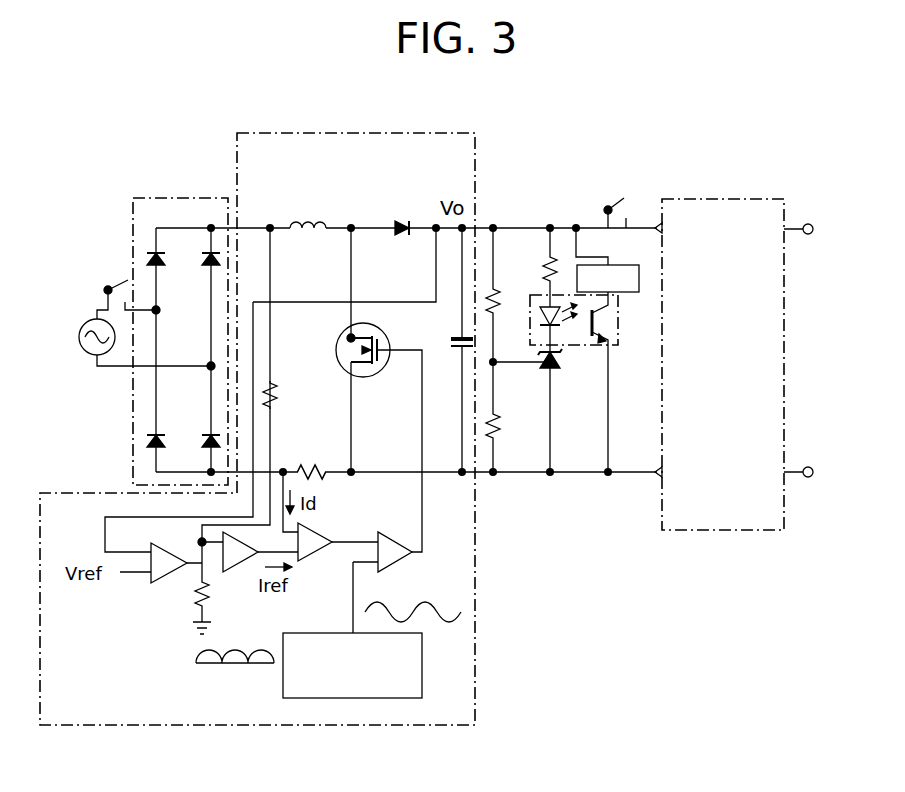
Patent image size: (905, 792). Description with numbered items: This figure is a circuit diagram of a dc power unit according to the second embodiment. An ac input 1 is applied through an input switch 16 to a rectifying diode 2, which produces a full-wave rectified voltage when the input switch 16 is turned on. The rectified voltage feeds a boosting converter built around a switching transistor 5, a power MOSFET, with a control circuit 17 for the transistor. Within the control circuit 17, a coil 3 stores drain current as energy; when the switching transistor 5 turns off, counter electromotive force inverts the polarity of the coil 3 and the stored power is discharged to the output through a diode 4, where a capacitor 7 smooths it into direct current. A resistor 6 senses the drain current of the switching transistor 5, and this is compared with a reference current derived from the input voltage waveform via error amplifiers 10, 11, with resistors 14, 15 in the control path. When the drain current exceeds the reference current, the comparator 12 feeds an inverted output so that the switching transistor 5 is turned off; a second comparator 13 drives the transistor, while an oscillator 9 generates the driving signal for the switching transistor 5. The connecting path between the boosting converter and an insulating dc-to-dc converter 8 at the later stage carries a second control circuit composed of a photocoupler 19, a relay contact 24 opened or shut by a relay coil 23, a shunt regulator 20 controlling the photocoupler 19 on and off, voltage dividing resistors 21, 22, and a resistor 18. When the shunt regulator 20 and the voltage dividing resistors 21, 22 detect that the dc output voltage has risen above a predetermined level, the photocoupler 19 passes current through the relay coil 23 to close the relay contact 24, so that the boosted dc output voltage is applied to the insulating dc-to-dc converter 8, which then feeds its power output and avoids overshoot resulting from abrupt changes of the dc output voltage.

The ac input 1 is at (97, 356).
The rectifying diode 2 is at (192, 198).
The coil 3 is at (306, 226).
The diode 4 is at (402, 221).
The switching transistor 5 is at (345, 338).
The resistor 6 is at (302, 466).
The capacitor 7 is at (456, 350).
The insulating dc-to-dc converter 8 is at (732, 198).
The oscillator 9 is at (283, 683).
The error amplifier 10 is at (152, 576).
The error amplifier 11 is at (241, 568).
The comparator 12 is at (320, 562).
The comparator 13 is at (393, 538).
The resistor 14 is at (278, 392).
The resistor 15 is at (196, 604).
The input switch 16 is at (130, 285).
The control circuit 17 is at (478, 573).
The resistor 18 is at (550, 262).
The photocoupler 19 is at (611, 348).
The shunt regulator 20 is at (556, 373).
The voltage dividing resistor 21 is at (497, 292).
The voltage dividing resistor 22 is at (495, 414).
The relay coil 23 is at (620, 265).
The relay contact 24 is at (615, 203).